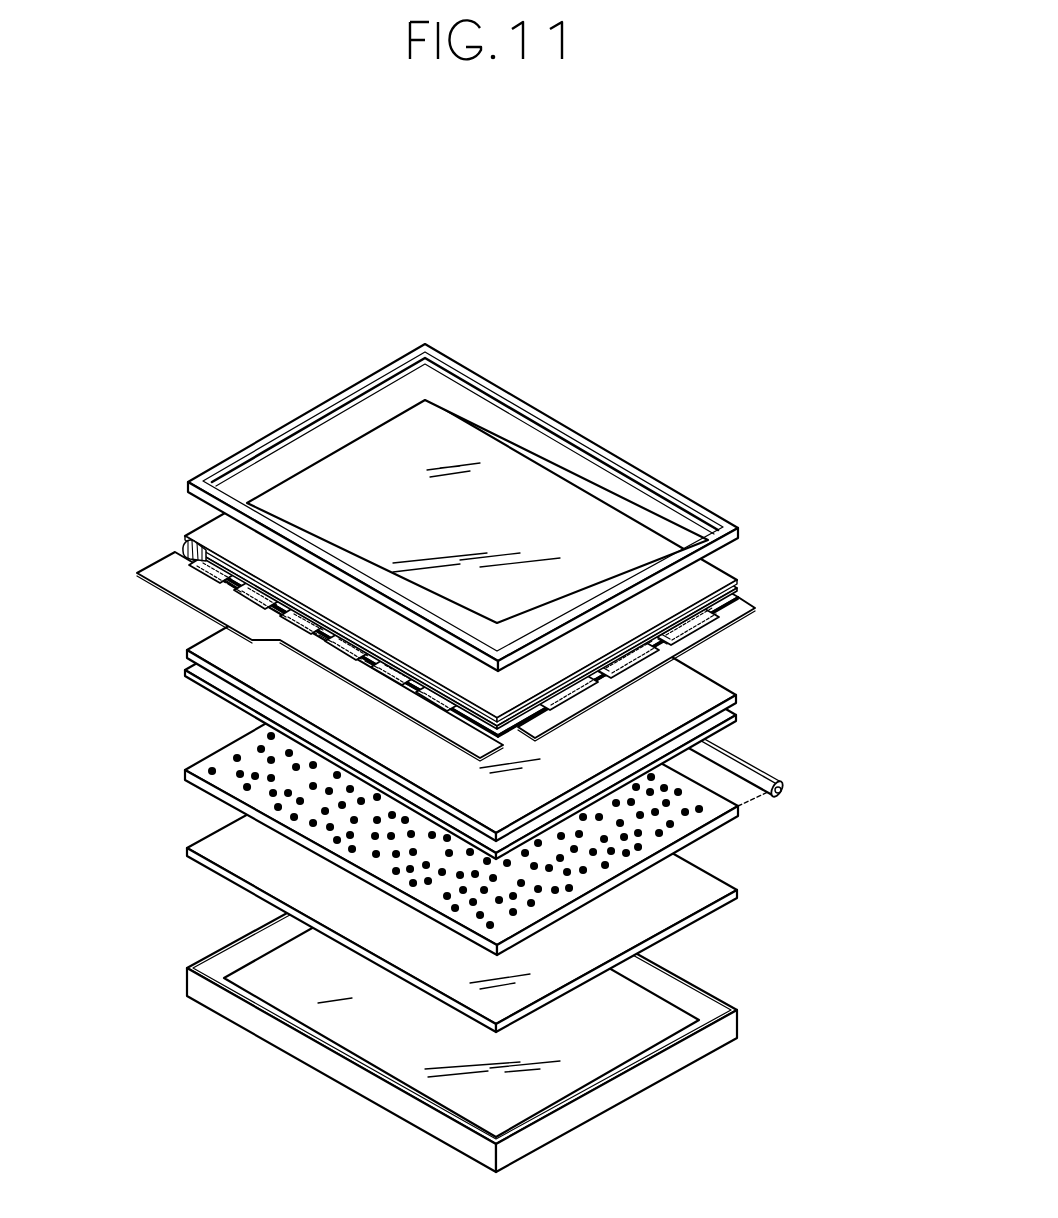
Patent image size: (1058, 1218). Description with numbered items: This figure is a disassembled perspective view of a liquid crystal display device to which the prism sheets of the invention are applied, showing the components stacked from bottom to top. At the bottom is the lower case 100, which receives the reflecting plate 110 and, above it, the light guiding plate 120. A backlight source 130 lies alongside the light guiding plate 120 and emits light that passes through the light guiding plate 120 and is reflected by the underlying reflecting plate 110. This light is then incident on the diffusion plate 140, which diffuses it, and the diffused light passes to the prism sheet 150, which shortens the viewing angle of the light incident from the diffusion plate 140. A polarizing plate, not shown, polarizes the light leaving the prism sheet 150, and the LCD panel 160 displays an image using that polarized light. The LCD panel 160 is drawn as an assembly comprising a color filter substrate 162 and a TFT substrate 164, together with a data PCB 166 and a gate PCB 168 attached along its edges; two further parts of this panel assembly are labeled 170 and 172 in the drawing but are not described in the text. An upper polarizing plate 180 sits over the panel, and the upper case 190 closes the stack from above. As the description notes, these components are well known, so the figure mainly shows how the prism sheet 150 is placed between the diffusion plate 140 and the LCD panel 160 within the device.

The lower case 100 is at (658, 1074).
The reflecting plate 110 is at (632, 932).
The light guiding plate 120 is at (652, 858).
The backlight source 130 is at (789, 791).
The diffusion plate 140 is at (742, 718).
The prism sheet 150 is at (742, 690).
The LCD panel 160 is at (454, 579).
The color filter substrate 162 is at (706, 573).
The TFT substrate 164 is at (742, 604).
The data PCB 166 is at (190, 542).
The gate PCB 168 is at (720, 622).
The printed circuit board 170 is at (137, 574).
The flexible printed circuit board 172 is at (700, 641).
The upper polarizing plate 180 is at (360, 455).
The upper case 190 is at (551, 412).